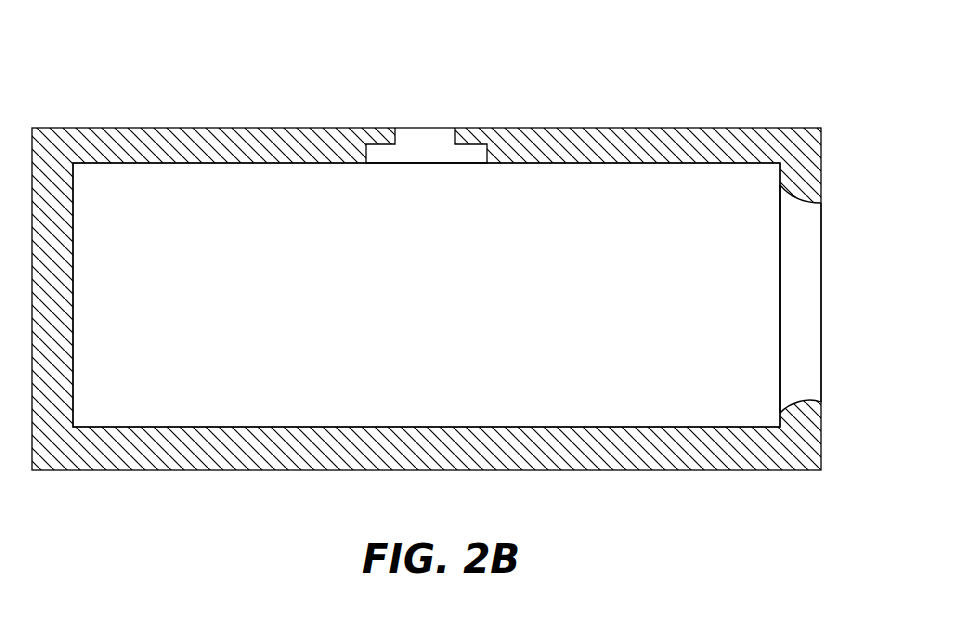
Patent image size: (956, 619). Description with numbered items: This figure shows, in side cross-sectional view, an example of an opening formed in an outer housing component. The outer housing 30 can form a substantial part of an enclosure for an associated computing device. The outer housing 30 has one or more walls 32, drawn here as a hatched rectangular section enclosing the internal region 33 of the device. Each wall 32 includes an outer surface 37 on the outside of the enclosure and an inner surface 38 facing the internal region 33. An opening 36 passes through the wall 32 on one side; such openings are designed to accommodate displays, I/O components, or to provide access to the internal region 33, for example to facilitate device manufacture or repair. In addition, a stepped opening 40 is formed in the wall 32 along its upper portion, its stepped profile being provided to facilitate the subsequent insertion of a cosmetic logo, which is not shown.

The outer housing 30 is at (454, 240).
The wall 32 is at (426, 269).
The internal region 33 is at (432, 298).
The opening 36 is at (798, 297).
The outer surface 37 is at (198, 128).
The inner surface 38 is at (243, 165).
The stepped opening 40 is at (428, 150).